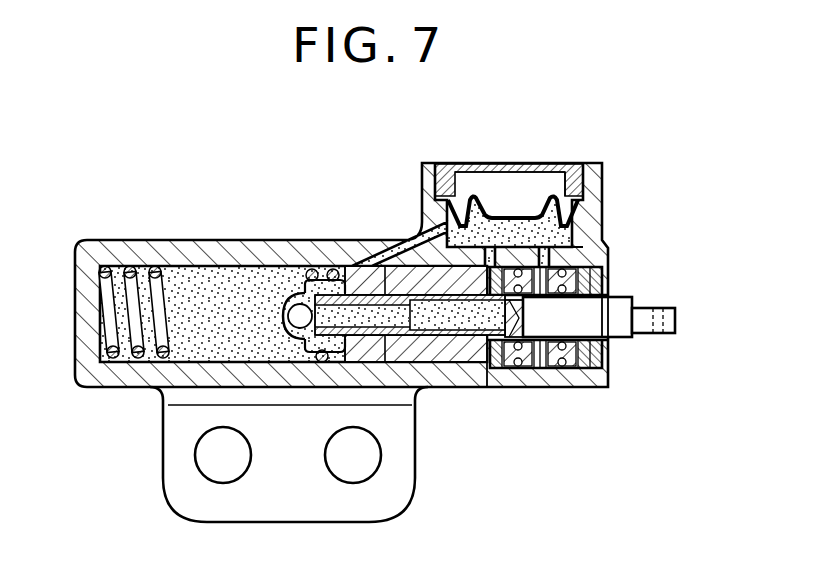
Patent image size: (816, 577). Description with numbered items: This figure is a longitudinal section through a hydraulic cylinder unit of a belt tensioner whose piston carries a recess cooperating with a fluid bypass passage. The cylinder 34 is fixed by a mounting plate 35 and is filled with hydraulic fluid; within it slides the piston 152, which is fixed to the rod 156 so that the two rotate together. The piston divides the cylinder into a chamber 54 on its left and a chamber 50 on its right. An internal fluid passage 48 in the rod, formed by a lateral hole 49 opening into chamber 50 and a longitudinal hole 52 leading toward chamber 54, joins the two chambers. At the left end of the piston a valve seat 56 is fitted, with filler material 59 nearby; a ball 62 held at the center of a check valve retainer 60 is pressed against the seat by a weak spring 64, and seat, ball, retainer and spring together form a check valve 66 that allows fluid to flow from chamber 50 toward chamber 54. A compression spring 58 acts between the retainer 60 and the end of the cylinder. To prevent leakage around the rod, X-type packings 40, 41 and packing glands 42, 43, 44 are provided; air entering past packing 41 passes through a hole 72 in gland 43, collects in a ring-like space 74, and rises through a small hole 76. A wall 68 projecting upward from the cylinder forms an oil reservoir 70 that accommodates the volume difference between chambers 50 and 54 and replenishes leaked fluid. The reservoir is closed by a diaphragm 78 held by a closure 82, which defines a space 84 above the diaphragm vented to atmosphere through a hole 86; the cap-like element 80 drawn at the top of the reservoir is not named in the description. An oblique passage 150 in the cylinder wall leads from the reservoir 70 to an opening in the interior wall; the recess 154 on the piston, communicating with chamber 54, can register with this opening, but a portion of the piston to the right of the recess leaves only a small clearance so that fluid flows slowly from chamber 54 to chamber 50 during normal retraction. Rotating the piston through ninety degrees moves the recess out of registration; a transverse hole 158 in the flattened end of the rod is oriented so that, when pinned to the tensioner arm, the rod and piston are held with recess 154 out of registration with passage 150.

The cylinder 34 is at (214, 233).
The mounting plate 35 is at (400, 486).
The check valve retainer 60 is at (288, 455).
The chamber 54 is at (204, 330).
The compression spring 58 is at (112, 358).
The internal fluid passage 48 is at (398, 366).
The longitudinal hole 52 is at (409, 318).
The weak spring 64 is at (288, 320).
The ball 62 is at (298, 339).
The check valve 66 is at (275, 288).
The valve seat 56 is at (336, 356).
The recess 154 is at (340, 272).
The filler material 59 is at (380, 267).
The oblique passage 150 is at (416, 242).
The lateral hole 49 is at (525, 306).
The transverse hole 158 is at (654, 335).
The rod 156 is at (612, 352).
The ring-like space 74 is at (557, 269).
The hole 72 is at (603, 290).
The packing gland 42 is at (496, 372).
The X-type packing 40 is at (518, 370).
The packing gland 43 is at (542, 372).
The X-type packing 41 is at (566, 372).
The packing gland 44 is at (594, 372).
The chamber 50 is at (470, 377).
The piston 152 is at (436, 392).
The cap 80 is at (458, 166).
The closure 82 is at (470, 168).
The hole 86 is at (586, 172).
The small hole 76 is at (521, 200).
The space 84 is at (545, 208).
The diaphragm 78 is at (548, 196).
The wall 68 is at (600, 212).
The oil reservoir 70 is at (586, 224).